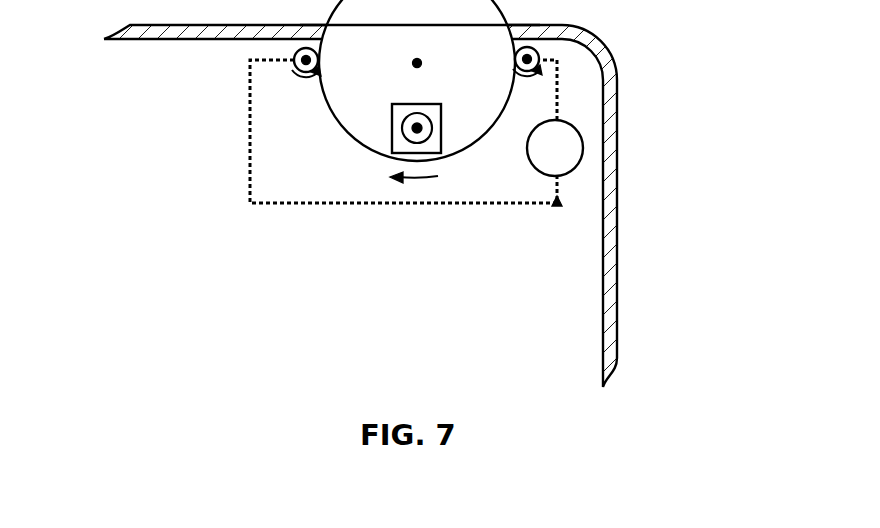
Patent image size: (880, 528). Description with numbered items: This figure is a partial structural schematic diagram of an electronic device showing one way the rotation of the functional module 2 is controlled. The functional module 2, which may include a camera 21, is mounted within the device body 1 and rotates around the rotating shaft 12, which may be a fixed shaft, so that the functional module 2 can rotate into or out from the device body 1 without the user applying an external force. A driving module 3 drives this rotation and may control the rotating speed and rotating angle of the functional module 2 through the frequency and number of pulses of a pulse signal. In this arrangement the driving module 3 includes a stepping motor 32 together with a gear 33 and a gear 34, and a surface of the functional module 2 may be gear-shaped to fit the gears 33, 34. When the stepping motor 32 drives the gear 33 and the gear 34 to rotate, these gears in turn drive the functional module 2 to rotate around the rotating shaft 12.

The device body 1 is at (612, 130).
The functional module 2 is at (355, 120).
The driving module 3 is at (560, 210).
The rotating shaft 12 is at (418, 60).
The camera 21 is at (403, 142).
The stepping motor 32 is at (567, 163).
The gear 33 is at (531, 47).
The gear 34 is at (312, 48).